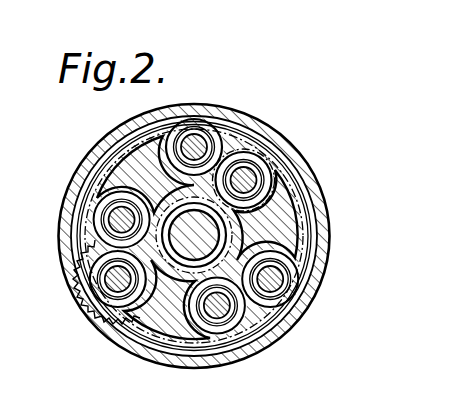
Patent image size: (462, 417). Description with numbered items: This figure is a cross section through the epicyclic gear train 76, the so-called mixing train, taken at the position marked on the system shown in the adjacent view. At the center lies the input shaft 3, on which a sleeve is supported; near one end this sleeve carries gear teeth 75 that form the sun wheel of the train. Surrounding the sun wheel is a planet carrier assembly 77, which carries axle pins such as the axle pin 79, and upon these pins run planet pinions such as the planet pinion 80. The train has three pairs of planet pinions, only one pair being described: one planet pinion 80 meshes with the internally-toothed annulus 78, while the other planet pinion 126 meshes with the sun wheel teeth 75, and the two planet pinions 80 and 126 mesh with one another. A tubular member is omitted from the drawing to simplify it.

The epicyclic gear train 76 is at (80, 157).
The planet pinion 80 is at (204, 120).
The axle pin 79 is at (206, 133).
The planet pinion 126 is at (265, 173).
The planet carrier assembly 77 is at (280, 222).
The internally-toothed annulus 78 is at (322, 231).
The input shaft 3 is at (318, 272).
The gear teeth 75 is at (130, 334).